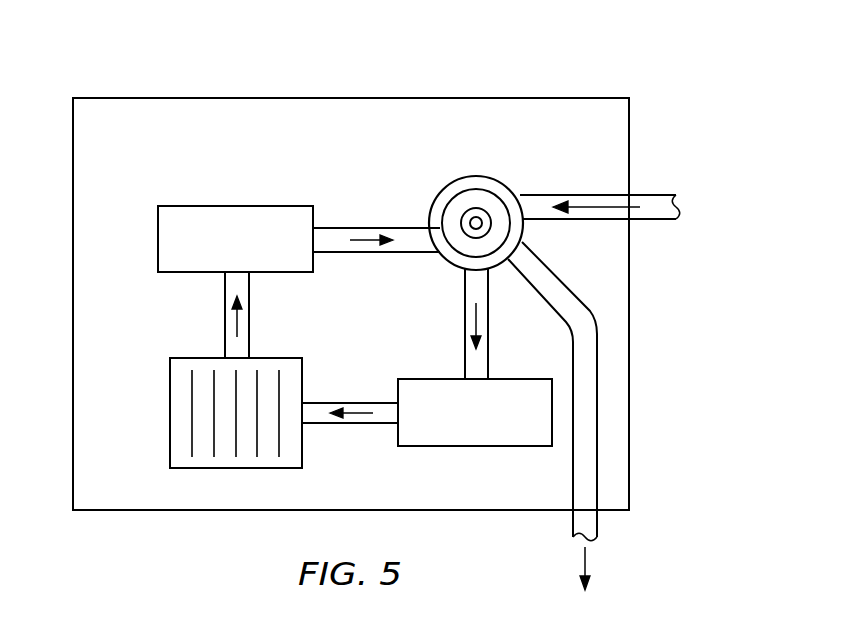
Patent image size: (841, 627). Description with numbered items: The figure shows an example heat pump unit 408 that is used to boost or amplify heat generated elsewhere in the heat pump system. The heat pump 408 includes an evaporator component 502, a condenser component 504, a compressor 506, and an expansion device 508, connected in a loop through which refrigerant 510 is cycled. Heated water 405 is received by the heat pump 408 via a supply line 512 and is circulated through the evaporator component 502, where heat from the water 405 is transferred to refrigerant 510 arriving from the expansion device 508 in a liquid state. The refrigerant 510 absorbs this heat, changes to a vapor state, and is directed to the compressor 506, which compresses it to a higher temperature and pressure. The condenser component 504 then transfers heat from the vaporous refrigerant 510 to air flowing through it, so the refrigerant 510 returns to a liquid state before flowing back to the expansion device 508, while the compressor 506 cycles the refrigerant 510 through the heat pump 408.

The heat pump unit 408 is at (208, 93).
The evaporator component 502 is at (477, 176).
The condenser component 504 is at (170, 412).
The compressor 506 is at (475, 447).
The expansion device 508 is at (158, 240).
The refrigerant 510 is at (370, 238).
The supply line 512 is at (650, 195).
The water 405 is at (580, 195).